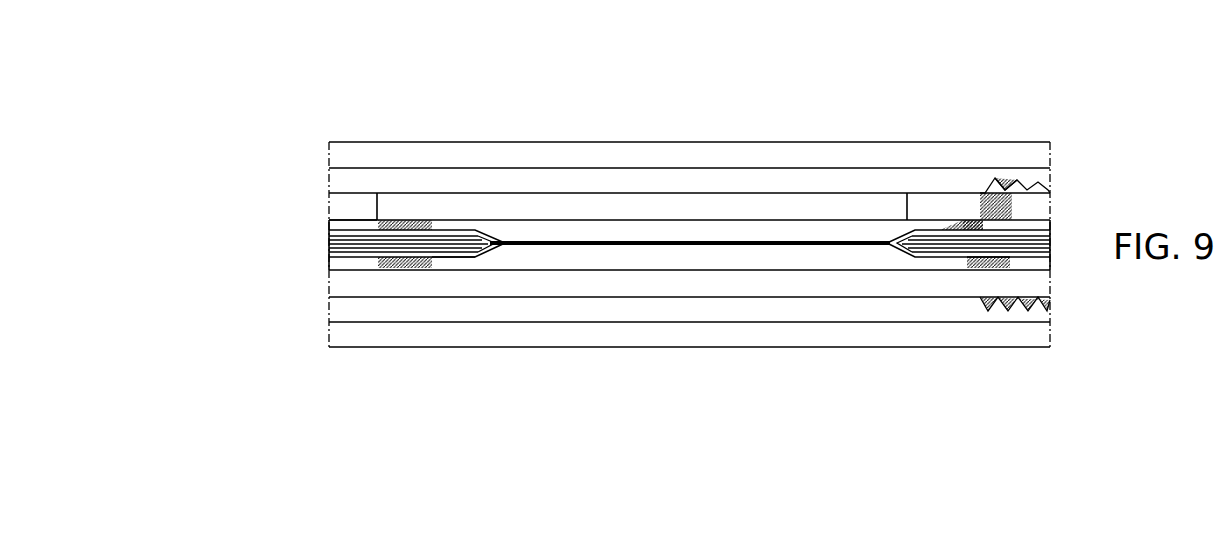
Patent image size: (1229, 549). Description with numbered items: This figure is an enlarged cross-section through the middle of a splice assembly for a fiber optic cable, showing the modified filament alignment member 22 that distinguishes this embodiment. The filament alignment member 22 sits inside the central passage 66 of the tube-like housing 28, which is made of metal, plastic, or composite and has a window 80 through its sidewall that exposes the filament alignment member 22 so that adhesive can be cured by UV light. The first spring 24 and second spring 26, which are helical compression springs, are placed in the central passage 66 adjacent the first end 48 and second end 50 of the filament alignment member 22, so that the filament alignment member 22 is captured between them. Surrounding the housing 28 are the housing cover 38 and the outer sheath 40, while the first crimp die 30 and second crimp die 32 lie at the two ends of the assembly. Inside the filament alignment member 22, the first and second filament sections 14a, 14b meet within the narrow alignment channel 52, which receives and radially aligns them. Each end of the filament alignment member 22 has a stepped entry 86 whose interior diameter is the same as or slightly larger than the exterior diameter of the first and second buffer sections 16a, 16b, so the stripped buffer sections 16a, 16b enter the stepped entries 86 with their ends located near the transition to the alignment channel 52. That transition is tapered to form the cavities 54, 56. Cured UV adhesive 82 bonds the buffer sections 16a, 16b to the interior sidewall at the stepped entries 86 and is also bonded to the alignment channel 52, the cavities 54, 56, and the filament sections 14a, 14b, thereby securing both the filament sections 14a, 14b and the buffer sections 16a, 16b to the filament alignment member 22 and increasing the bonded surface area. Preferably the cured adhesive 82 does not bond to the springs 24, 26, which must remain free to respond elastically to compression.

The first filament section 14a is at (547, 243).
The second filament section 14b is at (820, 243).
The first buffer section 16a is at (450, 237).
The second buffer section 16b is at (940, 235).
The filament alignment member 22 is at (587, 217).
The first spring 24 is at (403, 225).
The second spring 26 is at (967, 225).
The housing 28 is at (358, 205).
The first crimp die 30 is at (340, 262).
The second crimp die 32 is at (1045, 265).
The housing cover 38 is at (635, 178).
The outer sheath 40 is at (692, 152).
The first end 48 is at (427, 262).
The second end 50 is at (963, 265).
The alignment channel 52 is at (597, 246).
The cavity 54 is at (483, 250).
The cavity 56 is at (908, 245).
The central passage 66 is at (562, 272).
The window 80 is at (665, 215).
The cured UV adhesive 82 is at (468, 232).
The stepped entry 86 is at (448, 257).